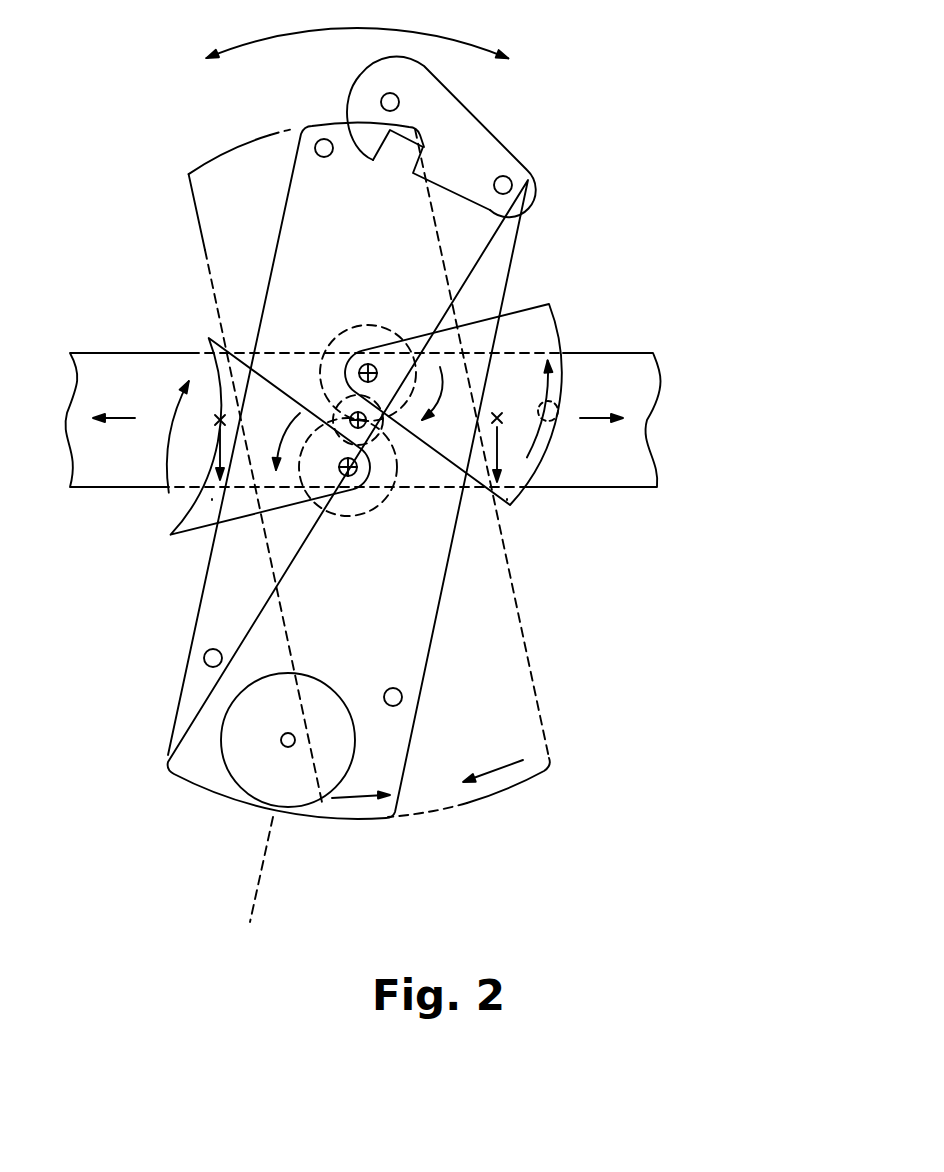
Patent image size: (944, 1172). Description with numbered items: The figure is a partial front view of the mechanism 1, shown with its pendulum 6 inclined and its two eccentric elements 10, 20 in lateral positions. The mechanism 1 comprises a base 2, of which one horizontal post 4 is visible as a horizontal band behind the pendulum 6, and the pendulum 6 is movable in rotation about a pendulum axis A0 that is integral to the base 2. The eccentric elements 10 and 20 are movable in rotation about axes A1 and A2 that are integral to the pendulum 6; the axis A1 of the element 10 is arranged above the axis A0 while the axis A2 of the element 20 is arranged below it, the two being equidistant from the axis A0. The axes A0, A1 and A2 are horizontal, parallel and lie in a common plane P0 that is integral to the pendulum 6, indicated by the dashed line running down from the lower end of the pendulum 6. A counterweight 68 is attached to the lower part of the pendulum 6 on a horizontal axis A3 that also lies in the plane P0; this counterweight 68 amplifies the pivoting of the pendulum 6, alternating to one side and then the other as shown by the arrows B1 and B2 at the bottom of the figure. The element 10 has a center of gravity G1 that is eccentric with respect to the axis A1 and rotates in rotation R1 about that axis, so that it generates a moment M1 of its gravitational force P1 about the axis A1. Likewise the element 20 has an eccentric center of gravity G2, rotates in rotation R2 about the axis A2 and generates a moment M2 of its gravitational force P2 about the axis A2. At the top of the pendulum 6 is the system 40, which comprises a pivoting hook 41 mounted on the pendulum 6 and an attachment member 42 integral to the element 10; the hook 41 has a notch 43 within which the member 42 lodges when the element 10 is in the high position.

The mechanism 1 is at (373, 596).
The base 2 is at (325, 449).
The horizontal post 4 is at (93, 473).
The pendulum 6 is at (500, 240).
The eccentric element 10 is at (479, 371).
The eccentric element 20 is at (251, 465).
The system 40 is at (475, 136).
The pivoting hook 41 is at (463, 140).
The attachment member 42 is at (557, 403).
The notch 43 is at (399, 162).
The counterweight 68 is at (240, 735).
The pendulum axis A0 is at (335, 402).
The axis of rotation A1 is at (364, 345).
The axis of rotation A2 is at (362, 517).
The horizontal axis A3 is at (283, 733).
The arrow B1 is at (362, 778).
The arrow B2 is at (493, 758).
The center of gravity G1 is at (497, 433).
The center of gravity G2 is at (217, 435).
The moment M1 is at (443, 405).
The moment M2 is at (279, 461).
The plane P0 is at (252, 886).
The gravitational force P1 is at (508, 491).
The gravitational force P2 is at (212, 494).
The rotation R1 is at (541, 391).
The rotation R2 is at (193, 423).